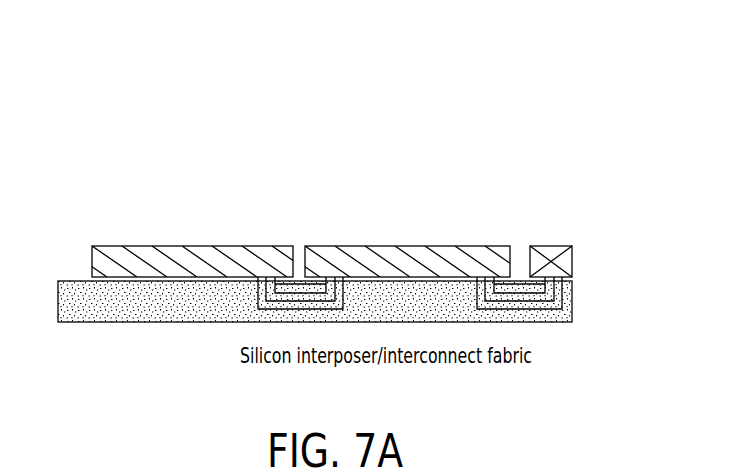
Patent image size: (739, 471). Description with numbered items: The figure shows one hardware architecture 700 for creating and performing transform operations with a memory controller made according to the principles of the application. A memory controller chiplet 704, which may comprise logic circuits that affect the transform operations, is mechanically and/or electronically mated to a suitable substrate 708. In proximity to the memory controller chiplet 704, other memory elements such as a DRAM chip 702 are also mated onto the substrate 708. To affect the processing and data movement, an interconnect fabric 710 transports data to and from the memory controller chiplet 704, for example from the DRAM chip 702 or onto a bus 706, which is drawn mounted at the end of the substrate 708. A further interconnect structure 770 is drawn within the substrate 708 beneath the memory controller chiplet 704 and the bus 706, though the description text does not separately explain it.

The architecture 700 is at (414, 82).
The DRAM chip 702 is at (107, 265).
The memory controller chiplet 704 is at (492, 252).
The bus 706 is at (564, 262).
The substrate 708 is at (133, 303).
The interconnect fabric 710 is at (270, 309).
The interconnect bridge 770 is at (565, 297).